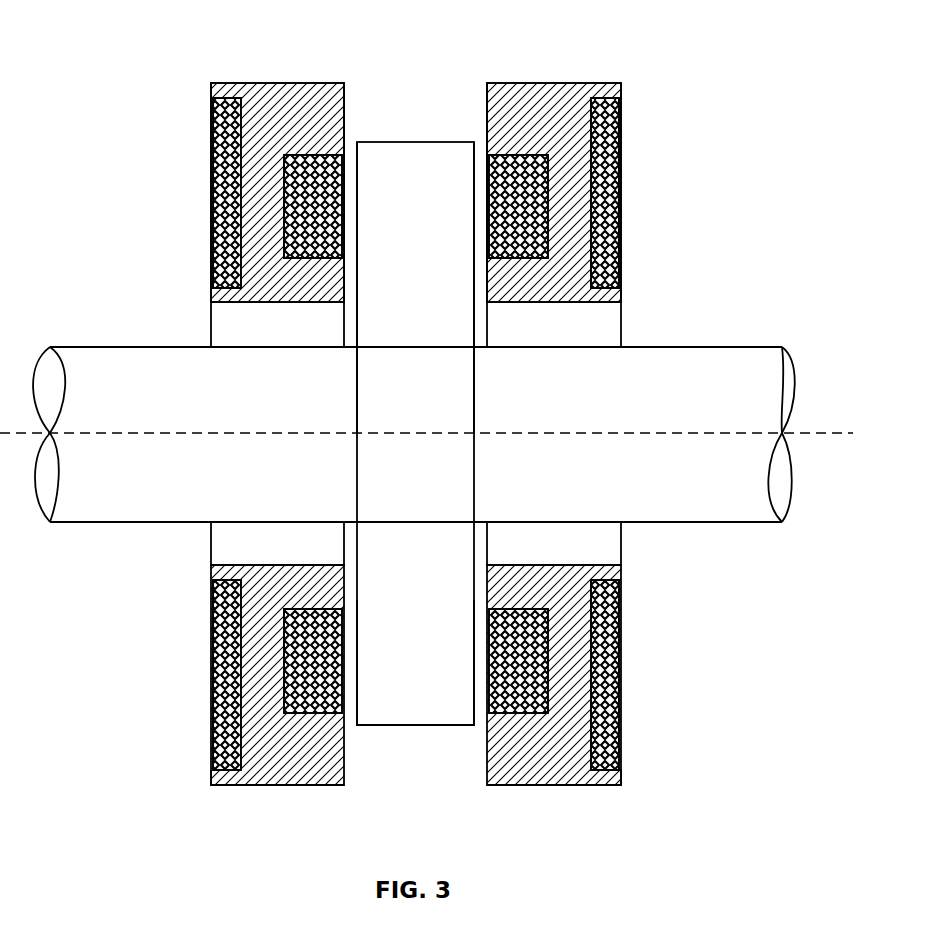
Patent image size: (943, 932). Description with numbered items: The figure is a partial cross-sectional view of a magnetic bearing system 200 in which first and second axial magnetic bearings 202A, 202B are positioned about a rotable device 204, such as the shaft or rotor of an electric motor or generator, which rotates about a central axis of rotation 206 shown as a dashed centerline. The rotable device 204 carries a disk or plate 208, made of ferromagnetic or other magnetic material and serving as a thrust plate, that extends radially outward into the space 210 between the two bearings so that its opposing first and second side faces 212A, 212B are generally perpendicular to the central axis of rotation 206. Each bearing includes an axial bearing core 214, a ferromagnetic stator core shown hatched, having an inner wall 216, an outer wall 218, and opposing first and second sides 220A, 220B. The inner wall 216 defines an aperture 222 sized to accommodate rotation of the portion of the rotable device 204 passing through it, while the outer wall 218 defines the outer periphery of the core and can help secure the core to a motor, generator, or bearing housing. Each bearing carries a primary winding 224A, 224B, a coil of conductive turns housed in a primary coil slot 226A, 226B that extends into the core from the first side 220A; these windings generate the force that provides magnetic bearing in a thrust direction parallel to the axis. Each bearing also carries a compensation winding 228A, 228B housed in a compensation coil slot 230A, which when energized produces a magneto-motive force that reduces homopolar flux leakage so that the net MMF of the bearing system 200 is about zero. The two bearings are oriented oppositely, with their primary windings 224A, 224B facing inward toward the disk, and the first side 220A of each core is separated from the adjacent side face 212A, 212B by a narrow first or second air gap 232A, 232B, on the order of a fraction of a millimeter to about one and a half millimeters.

The magnetic bearing system 200 is at (723, 130).
The first axial magnetic bearing 202A is at (211, 297).
The second axial magnetic bearing 202B is at (621, 297).
The rotable device 204 is at (763, 397).
The central axis of rotation 206 is at (833, 437).
The disk or plate 208 is at (393, 194).
The space 210 is at (393, 132).
The first side face 212A is at (357, 257).
The second side face 212B is at (474, 277).
The axial bearing core 214 is at (270, 102).
The inner wall 216 is at (257, 302).
The outer wall 218 is at (233, 83).
The first side 220A is at (345, 768).
The second side 220B is at (212, 778).
The aperture 222 is at (232, 550).
The first primary winding 224A is at (302, 692).
The second primary winding 224B is at (530, 690).
The first primary coil slot 226A is at (315, 713).
The second primary coil slot 226B is at (517, 713).
The first compensation winding 228A is at (211, 697).
The second compensation winding 228B is at (621, 697).
The compensation coil slot 230A is at (250, 760).
The first air gap 232A is at (357, 702).
The second air gap 232B is at (480, 702).